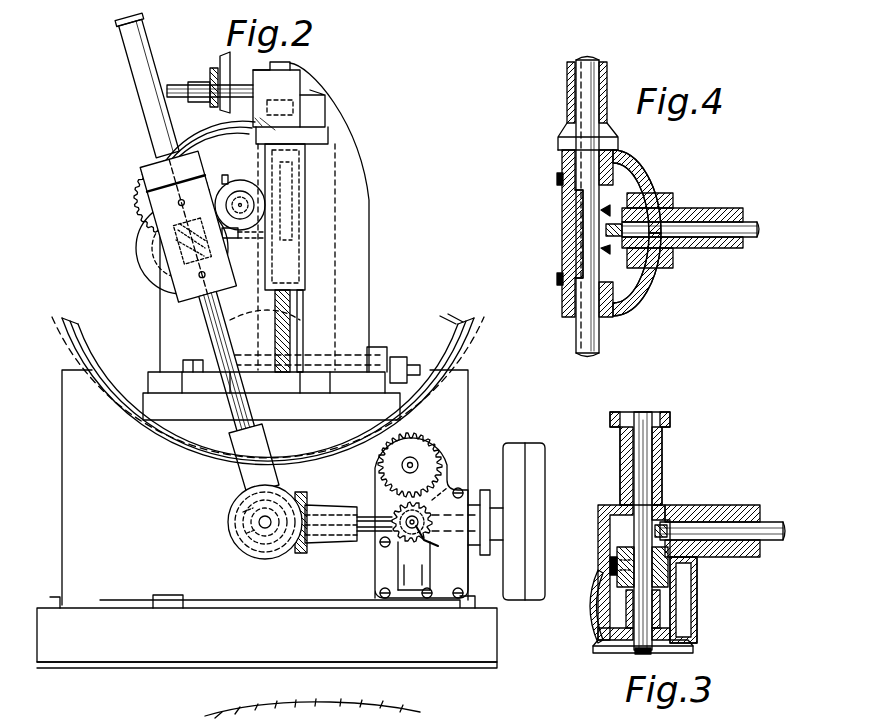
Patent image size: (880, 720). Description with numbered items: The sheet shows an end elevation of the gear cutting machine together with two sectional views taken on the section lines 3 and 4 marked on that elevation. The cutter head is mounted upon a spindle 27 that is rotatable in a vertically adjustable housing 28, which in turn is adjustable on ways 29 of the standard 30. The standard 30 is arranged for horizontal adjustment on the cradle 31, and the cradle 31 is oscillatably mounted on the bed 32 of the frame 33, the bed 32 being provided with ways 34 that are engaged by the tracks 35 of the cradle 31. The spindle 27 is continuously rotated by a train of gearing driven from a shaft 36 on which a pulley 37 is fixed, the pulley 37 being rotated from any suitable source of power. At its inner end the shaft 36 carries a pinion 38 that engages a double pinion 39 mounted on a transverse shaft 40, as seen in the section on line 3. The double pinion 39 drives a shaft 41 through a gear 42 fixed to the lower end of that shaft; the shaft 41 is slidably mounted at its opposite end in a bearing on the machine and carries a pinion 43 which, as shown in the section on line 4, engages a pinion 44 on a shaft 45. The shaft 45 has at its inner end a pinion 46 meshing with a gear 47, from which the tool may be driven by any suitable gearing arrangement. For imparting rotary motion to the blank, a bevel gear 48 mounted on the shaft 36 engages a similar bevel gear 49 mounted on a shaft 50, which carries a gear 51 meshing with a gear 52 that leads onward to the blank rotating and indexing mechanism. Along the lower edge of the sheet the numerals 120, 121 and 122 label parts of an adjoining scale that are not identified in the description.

In FIG. 2, the section line 3— 3 is at (345, 521).
In FIG. 2, the section line 4— 4 is at (161, 150).
In FIG. 2, the spindle 27 is at (240, 197).
In FIG. 2, the vertically adjustable housing 28 is at (306, 218).
In FIG. 2, the ways 29 is at (272, 324).
In FIG. 2, the standard 30 is at (373, 285).
In FIG. 2, the cradle 31 is at (430, 348).
In FIG. 2, the bed 32 is at (468, 442).
In FIG. 2, the frame 33 is at (500, 640).
In FIG. 2, the ways 34 is at (465, 368).
In FIG. 2, the tracks 35 is at (466, 334).
In FIG. 2, the shaft 36 is at (365, 533).
In FIG. 3, the shaft 36 is at (773, 526).
In FIG. 2, the pulley 37 is at (540, 447).
In FIG. 3, the pinion 38 is at (657, 510).
In FIG. 3, the double pinion 39 is at (615, 553).
In FIG. 2, the transverse shaft 40 is at (263, 527).
In FIG. 3, the transverse shaft 40 is at (644, 464).
In FIG. 2, the shaft 41 is at (212, 335).
In FIG. 4, the shaft 41 is at (600, 344).
In FIG. 2, the gear 42 is at (248, 510).
In FIG. 2, the pinion 43 is at (218, 255).
In FIG. 4, the pinion 43 is at (574, 248).
In FIG. 2, the pinion 44 is at (178, 270).
In FIG. 4, the pinion 44 is at (612, 205).
In FIG. 4, the shaft 45 is at (757, 222).
In FIG. 2, the pinion 46 is at (172, 238).
In FIG. 2, the gear 47 is at (140, 186).
In FIG. 2, the bevel gear 48 is at (456, 487).
In FIG. 2, the bevel gear 49 is at (392, 512).
In FIG. 2, the shaft 50 is at (434, 534).
In FIG. 2, the gear 51 is at (421, 546).
In FIG. 2, the gear 52 is at (428, 452).
In FIG. 2, the scale 120 is at (207, 716).
In FIG. 2, the scale mark 121 is at (258, 717).
In FIG. 2, the scale mark 122 is at (318, 718).